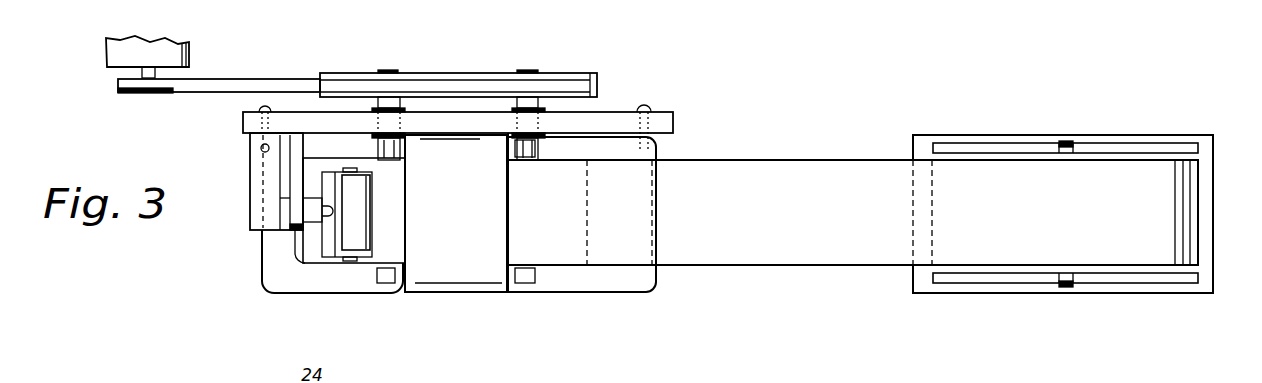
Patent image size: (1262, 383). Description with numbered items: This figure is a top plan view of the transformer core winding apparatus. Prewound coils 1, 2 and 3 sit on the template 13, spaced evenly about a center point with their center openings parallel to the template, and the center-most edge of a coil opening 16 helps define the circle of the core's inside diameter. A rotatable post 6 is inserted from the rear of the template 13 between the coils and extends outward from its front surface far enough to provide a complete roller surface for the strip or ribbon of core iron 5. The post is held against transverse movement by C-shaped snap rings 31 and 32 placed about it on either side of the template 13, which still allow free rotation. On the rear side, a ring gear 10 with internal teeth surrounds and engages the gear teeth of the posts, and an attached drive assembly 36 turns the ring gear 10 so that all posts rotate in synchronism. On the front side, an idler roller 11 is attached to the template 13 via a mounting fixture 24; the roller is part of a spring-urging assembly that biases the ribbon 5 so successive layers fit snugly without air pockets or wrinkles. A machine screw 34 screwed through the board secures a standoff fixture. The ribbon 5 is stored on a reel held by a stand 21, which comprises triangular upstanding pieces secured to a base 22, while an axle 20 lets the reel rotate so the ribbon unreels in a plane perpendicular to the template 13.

The prewound coil 1 is at (651, 292).
The prewound coil 2 is at (262, 253).
The prewound coil 3 is at (470, 219).
The strip or ribbon of core iron 5 is at (760, 219).
The rotatable post 6 is at (530, 292).
The ring gear 10 is at (483, 73).
The idler roller 11 is at (373, 218).
The template 13 is at (612, 118).
The coil opening 16 is at (313, 255).
The axle 20 is at (1065, 290).
The stand 21 is at (1044, 278).
The base 22 is at (912, 280).
The mounting fixture 24 is at (246, 152).
The C-shaped snap ring 31 is at (404, 137).
The C-shaped snap ring 32 is at (403, 112).
The machine screw 34 is at (647, 110).
The drive assembly 36 is at (225, 83).